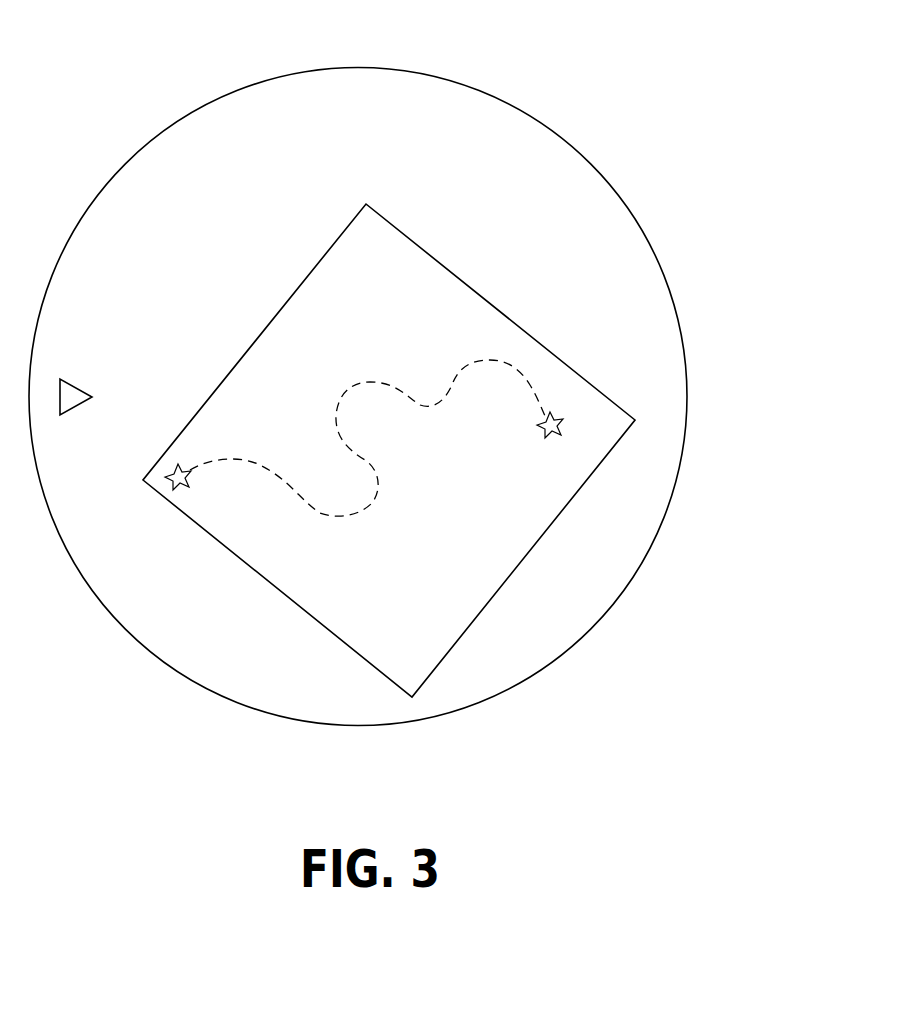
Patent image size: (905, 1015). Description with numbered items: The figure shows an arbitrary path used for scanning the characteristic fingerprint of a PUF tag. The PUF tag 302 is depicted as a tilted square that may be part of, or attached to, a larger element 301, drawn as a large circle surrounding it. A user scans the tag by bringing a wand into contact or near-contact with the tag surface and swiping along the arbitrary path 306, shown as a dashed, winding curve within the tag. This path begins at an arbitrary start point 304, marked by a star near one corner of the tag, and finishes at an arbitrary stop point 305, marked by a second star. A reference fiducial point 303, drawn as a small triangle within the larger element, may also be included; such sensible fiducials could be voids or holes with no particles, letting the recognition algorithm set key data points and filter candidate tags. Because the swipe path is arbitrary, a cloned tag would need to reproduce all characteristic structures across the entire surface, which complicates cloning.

The larger element 301 is at (116, 124).
The PUF tag 302 is at (468, 278).
The reference fiducial point 303 is at (82, 382).
The arbitrary start point 304 is at (170, 488).
The arbitrary stop point 305 is at (556, 431).
The arbitrary path 306 is at (374, 497).